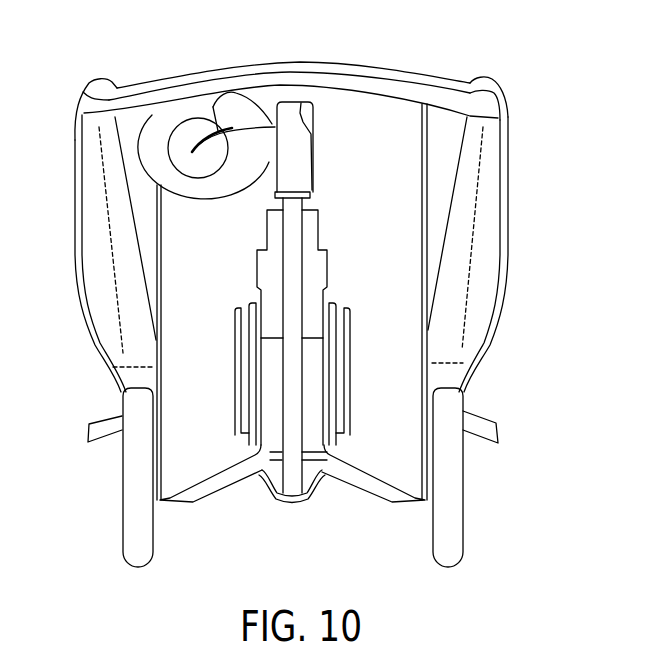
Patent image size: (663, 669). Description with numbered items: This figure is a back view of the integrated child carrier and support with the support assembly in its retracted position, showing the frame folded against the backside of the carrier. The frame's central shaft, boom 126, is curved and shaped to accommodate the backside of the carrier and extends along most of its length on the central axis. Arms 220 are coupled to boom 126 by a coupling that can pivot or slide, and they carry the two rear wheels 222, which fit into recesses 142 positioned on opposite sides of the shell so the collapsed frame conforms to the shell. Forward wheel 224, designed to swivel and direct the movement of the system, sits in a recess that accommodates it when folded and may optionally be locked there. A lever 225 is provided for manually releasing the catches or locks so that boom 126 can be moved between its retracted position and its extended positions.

The recesses 142 is at (478, 352).
The forward wheel 224 is at (213, 107).
The boom 126 is at (290, 476).
The lever 225 is at (291, 504).
The arms 220 is at (203, 498).
The rear wheels 222 is at (140, 562).